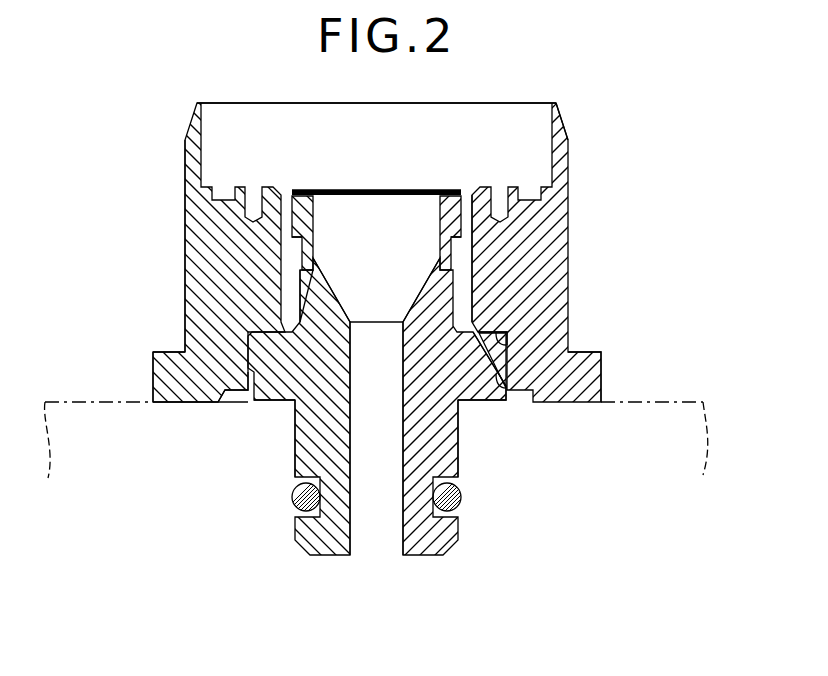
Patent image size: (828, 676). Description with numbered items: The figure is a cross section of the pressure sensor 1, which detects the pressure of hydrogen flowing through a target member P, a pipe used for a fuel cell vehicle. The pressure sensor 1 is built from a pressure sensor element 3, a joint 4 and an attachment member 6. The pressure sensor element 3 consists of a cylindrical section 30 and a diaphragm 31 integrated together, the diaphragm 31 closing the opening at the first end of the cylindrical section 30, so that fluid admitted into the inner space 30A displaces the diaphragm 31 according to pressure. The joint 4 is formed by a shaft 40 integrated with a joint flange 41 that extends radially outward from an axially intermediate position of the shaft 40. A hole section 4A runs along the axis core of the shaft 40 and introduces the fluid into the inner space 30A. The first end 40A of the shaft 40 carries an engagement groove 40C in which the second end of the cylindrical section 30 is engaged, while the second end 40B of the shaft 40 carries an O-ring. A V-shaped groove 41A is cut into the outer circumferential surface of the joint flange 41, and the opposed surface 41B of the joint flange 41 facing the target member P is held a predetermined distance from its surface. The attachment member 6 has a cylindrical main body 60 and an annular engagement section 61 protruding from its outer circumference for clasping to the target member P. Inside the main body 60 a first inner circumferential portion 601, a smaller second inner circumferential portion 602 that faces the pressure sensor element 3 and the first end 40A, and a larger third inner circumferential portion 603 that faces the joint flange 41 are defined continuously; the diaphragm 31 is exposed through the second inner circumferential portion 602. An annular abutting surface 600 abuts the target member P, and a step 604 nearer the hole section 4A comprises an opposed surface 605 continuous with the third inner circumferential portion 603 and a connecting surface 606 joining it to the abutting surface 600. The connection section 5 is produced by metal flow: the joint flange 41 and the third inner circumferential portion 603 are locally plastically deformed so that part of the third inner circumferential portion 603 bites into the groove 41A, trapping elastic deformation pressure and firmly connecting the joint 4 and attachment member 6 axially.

The pressure sensor 1 is at (649, 109).
The pressure sensor element 3 is at (372, 143).
The cylindrical section 30 is at (451, 228).
The inner space 30A is at (314, 235).
The diaphragm 31 is at (386, 189).
The joint 4 is at (548, 480).
The hole section 4A is at (352, 509).
The shaft 40 is at (459, 447).
The first end of the shaft 40A is at (346, 312).
The second end of the shaft 40B is at (433, 542).
The engagement groove 40C is at (320, 262).
The joint flange 41 is at (508, 402).
The V-shaped groove 41A is at (503, 362).
The opposed surface of the joint flange 41B is at (296, 403).
The connection section 5 is at (507, 385).
The attachment member 6 is at (180, 156).
The main body 60 is at (205, 238).
The engagement section 61 is at (165, 383).
The abutting surface 600 is at (573, 404).
The first inner circumferential portion 601 is at (548, 140).
The second inner circumferential portion 602 is at (470, 241).
The third inner circumferential portion 603 is at (508, 334).
The step 604 is at (245, 468).
The opposed surface 605 is at (240, 393).
The connecting surface 606 is at (222, 402).
The target member P is at (685, 401).